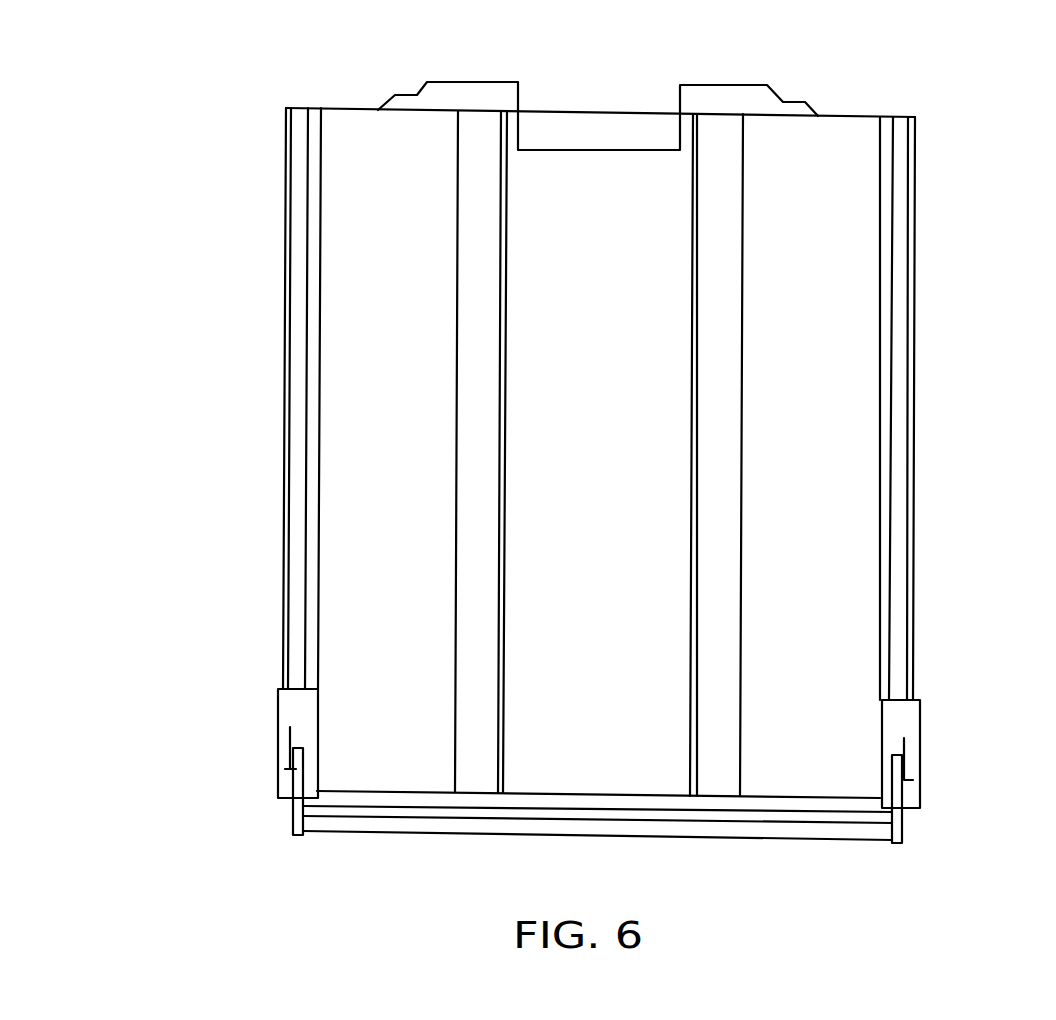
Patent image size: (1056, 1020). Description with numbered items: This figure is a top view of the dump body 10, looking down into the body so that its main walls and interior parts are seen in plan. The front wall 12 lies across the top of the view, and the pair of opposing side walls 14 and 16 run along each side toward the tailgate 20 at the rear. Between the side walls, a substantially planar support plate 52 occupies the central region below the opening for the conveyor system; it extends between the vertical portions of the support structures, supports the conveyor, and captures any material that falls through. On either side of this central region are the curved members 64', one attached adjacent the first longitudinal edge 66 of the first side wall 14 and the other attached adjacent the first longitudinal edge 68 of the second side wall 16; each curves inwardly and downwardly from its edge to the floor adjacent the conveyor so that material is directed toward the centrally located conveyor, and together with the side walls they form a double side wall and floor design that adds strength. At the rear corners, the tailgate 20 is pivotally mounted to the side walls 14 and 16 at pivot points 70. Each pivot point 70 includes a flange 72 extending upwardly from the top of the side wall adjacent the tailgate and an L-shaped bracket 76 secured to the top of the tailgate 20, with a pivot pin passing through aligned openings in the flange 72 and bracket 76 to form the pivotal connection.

The dump body 10 is at (137, 165).
The front wall 12 is at (757, 87).
The first side wall 14 is at (285, 458).
The second side wall 16 is at (917, 450).
The tailgate 20 is at (480, 833).
The substantially planar support plate 52 is at (581, 570).
The curved member 64' is at (588, 453).
The first longitudinal edge of the first side wall 66 is at (315, 212).
The first longitudinal edge of the second side wall 68 is at (885, 168).
The pivot point 70 is at (299, 734).
The flange 72 is at (288, 747).
The L-shaped bracket 76 is at (297, 797).